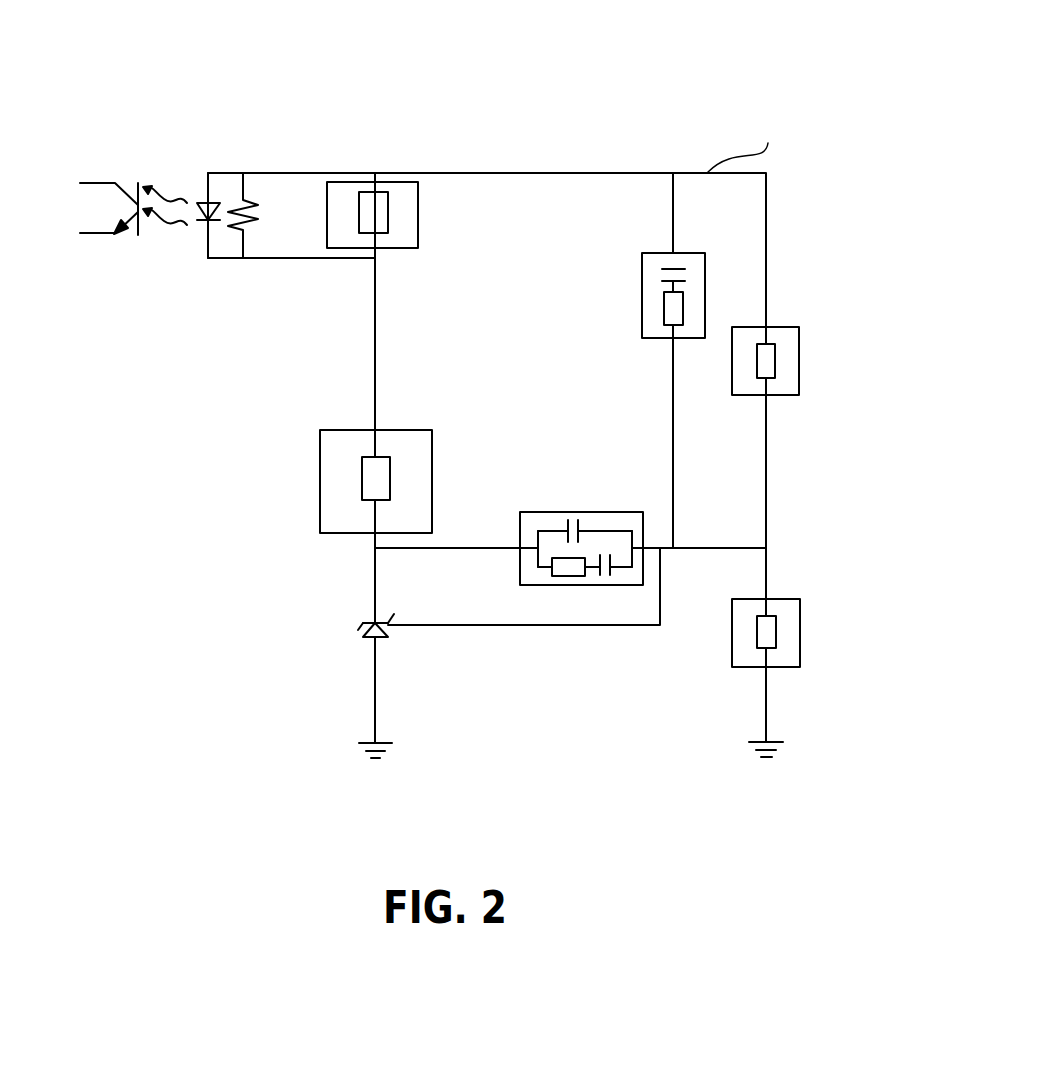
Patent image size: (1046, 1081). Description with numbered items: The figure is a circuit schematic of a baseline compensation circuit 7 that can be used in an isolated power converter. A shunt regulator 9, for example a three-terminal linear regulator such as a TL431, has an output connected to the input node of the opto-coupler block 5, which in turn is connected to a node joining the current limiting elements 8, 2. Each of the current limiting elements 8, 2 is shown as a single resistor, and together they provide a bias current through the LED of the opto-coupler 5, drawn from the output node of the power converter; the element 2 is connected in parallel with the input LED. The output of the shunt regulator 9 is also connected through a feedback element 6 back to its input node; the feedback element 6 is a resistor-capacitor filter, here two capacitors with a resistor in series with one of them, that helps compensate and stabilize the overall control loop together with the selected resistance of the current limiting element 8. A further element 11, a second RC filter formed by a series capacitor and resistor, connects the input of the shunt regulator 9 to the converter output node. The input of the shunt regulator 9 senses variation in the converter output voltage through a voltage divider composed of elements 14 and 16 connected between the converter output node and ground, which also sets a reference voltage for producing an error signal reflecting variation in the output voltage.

The current limiting element 2 is at (412, 228).
The opto-coupler block 5 is at (129, 153).
The feedback element 6 is at (552, 510).
The compensation circuit 7 is at (595, 73).
The current limiting element 8 is at (345, 428).
The shunt regulator 9 is at (365, 630).
The second RC filter circuit 11 is at (650, 252).
The voltage divider element 14 is at (786, 598).
The voltage divider element 16 is at (790, 323).